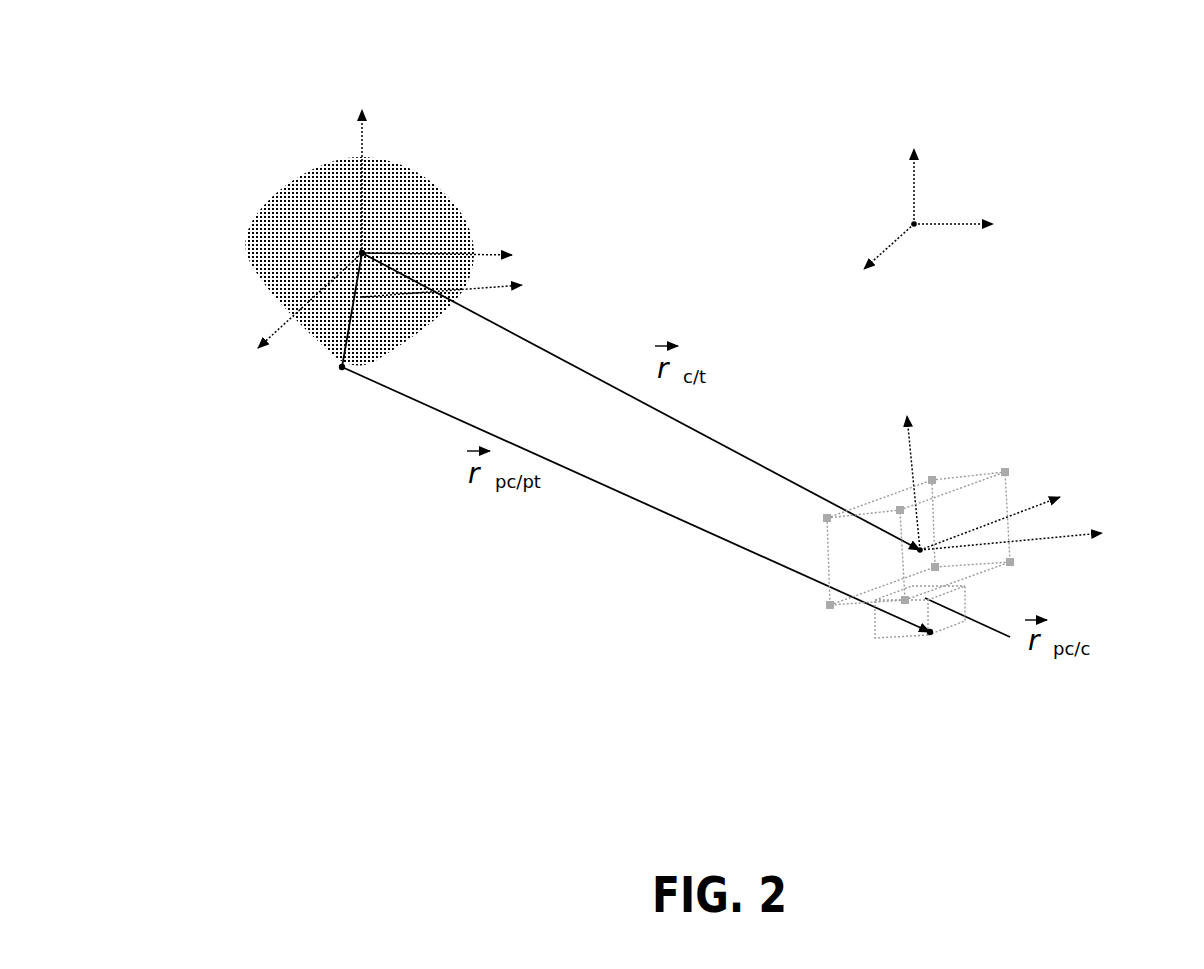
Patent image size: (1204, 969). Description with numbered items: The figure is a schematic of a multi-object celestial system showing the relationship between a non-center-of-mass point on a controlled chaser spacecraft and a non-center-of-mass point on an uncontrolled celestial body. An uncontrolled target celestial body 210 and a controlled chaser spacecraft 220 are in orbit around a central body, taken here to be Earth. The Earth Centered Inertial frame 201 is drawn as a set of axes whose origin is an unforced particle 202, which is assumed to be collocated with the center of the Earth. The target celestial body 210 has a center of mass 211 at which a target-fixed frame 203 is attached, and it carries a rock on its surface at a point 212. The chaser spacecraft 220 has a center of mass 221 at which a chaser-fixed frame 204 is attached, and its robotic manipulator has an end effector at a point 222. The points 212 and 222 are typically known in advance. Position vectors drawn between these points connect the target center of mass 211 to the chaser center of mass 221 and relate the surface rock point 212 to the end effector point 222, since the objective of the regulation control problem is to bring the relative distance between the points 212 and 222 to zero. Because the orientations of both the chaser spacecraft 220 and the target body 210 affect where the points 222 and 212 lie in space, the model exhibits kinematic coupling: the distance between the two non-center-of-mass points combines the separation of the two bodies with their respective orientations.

The Earth Centered Inertial frame 201 is at (967, 125).
The unforced particle 202 is at (938, 252).
The target-fixed frame 203 is at (382, 98).
The chaser-fixed frame 204 is at (912, 390).
The uncontrolled target celestial body 210 is at (430, 162).
The target center of mass 211 is at (362, 253).
The rock point on target surface 212 is at (340, 368).
The controlled chaser spacecraft 220 is at (968, 470).
The chaser center of mass 221 is at (920, 550).
The end effector point 222 is at (930, 632).